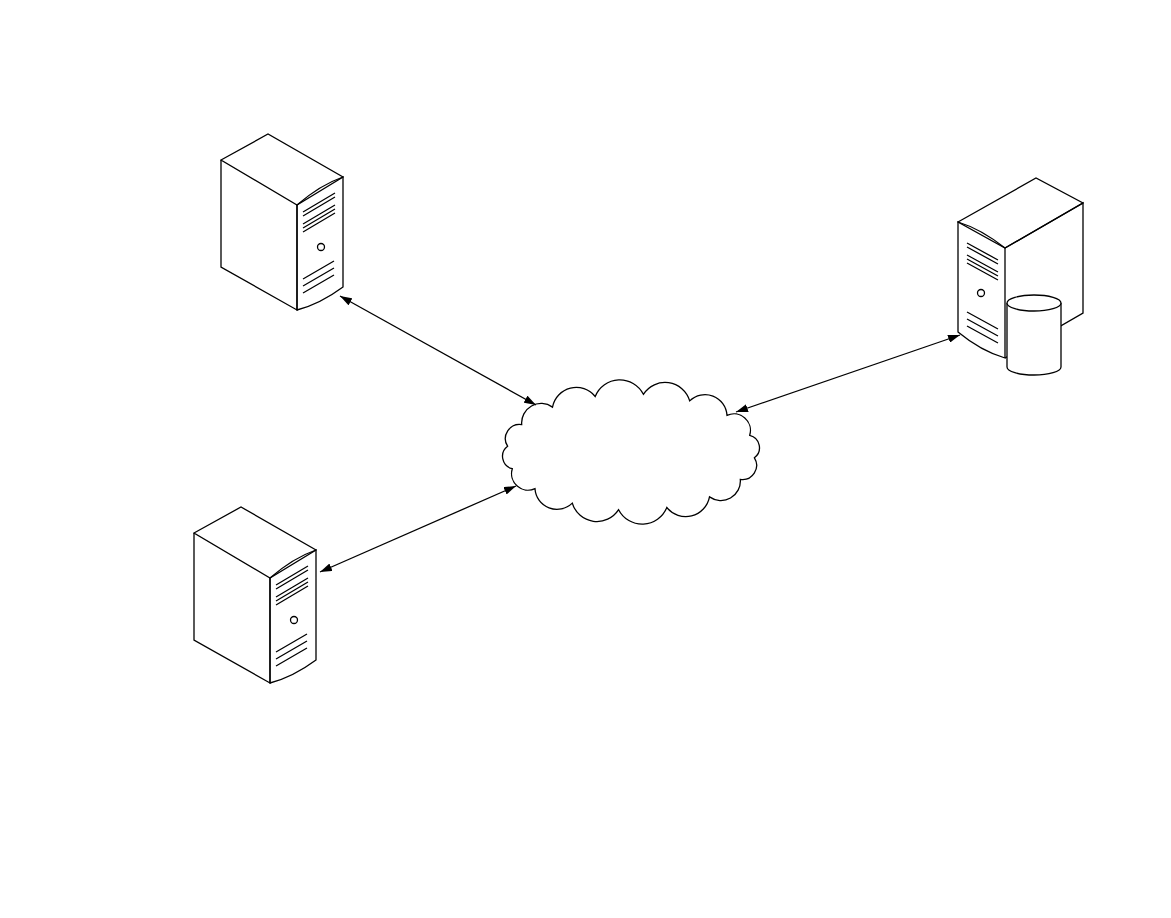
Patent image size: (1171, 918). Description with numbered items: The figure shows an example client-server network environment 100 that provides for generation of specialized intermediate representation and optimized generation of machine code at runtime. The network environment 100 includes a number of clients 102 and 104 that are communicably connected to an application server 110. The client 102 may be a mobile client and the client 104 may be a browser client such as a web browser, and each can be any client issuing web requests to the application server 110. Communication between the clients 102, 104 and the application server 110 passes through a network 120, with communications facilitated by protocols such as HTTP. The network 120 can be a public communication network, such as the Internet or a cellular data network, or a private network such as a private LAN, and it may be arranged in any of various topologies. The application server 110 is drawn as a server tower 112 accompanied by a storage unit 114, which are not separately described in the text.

The network environment 100 is at (838, 42).
The client 102 is at (268, 133).
The client 104 is at (243, 510).
The application server 110 is at (954, 368).
The server 112 is at (1036, 178).
The database 114 is at (1063, 373).
The network 120 is at (632, 390).